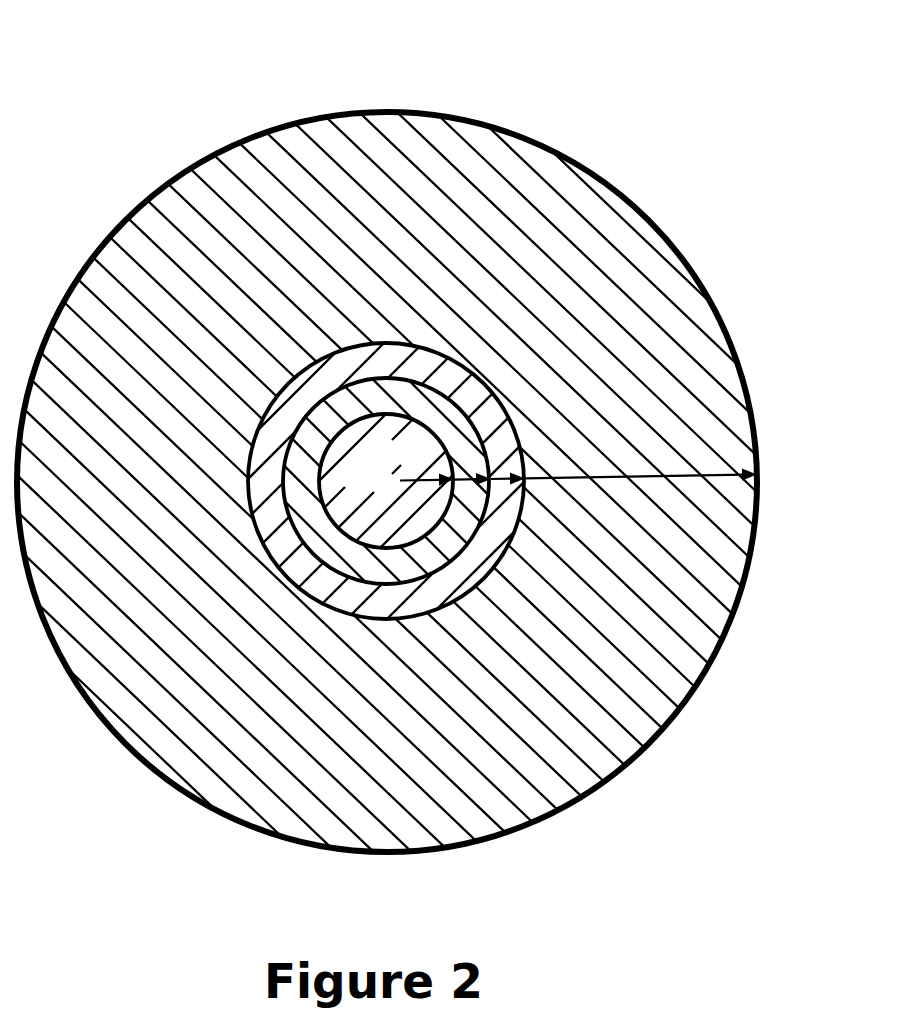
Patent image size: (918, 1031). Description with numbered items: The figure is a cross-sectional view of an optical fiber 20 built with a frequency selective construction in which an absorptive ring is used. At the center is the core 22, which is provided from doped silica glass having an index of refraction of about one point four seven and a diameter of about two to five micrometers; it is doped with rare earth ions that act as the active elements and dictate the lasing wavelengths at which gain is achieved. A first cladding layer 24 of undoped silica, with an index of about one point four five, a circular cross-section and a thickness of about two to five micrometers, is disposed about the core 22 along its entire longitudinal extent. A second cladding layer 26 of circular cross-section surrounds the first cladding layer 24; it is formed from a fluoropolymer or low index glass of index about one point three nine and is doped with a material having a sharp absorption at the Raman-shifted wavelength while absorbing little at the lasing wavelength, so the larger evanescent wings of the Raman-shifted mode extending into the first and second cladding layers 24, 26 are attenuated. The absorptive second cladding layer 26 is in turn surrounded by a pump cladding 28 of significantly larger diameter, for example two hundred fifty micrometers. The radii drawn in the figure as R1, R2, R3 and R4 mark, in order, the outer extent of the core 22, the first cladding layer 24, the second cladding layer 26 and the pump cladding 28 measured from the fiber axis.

The optical fiber 20 is at (403, 429).
The core 22 is at (390, 493).
The first cladding layer 24 is at (403, 407).
The second cladding layer 26 is at (405, 371).
The pump cladding 28 is at (407, 241).
The core radius R1 is at (427, 466).
The inner cladding radius R2 is at (472, 465).
The intermediate cladding radius R3 is at (507, 465).
The outer radius R4 is at (641, 461).